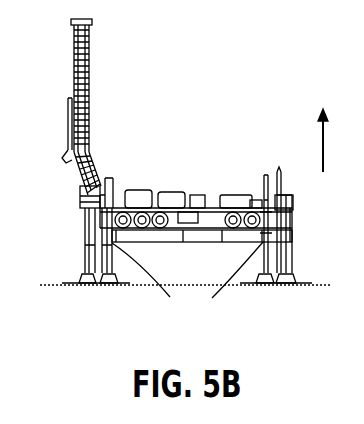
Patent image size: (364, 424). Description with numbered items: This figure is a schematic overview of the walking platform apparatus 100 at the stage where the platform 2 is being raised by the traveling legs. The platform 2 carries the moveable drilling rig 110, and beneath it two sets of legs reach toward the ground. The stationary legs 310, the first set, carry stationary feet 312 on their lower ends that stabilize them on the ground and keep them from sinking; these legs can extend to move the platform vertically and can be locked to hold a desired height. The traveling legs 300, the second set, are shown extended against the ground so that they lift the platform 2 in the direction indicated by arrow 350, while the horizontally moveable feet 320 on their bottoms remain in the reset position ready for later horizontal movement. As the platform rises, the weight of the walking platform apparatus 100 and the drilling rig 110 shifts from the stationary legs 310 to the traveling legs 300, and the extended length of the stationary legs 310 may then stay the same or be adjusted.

The walking platform apparatus 100 is at (240, 82).
The platform 2 is at (82, 233).
The moveable drilling rig 110 is at (172, 192).
The traveling legs 300 is at (85, 255).
The stationary legs 310 is at (187, 276).
The stationary feet 312 is at (110, 287).
The horizontally moveable feet 320 is at (80, 286).
The arrow 350 is at (322, 140).